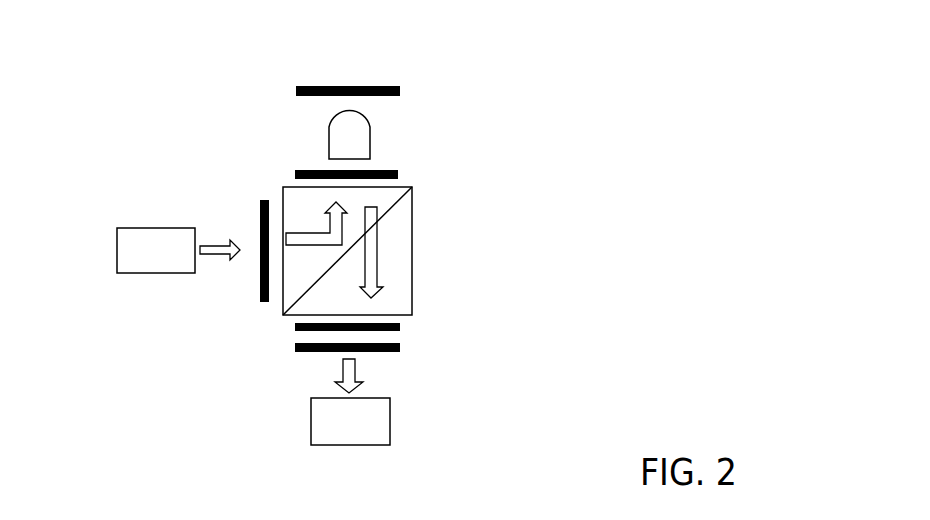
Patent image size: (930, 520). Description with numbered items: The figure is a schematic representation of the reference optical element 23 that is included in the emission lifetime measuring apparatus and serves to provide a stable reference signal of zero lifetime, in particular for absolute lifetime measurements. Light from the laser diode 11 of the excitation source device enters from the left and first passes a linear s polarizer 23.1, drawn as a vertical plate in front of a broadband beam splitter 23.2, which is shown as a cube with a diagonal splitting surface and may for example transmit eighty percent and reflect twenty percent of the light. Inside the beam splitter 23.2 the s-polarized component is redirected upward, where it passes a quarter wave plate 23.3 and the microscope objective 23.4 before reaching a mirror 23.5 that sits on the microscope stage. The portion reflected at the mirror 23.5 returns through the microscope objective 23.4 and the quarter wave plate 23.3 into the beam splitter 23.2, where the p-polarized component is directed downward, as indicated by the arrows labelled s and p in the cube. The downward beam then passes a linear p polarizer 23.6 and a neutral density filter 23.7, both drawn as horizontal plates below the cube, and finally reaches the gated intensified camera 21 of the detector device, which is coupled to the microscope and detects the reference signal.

The reference optical element 23 is at (104, 97).
The laser diode 11 is at (156, 250).
The gated intensified camera 21 is at (350, 421).
The linear s polarizer 23.1 is at (260, 274).
The broadband beam splitter 23.2 is at (398, 200).
The quarter wave plate 23.3 is at (400, 174).
The microscope objective 23.4 is at (370, 137).
The mirror 23.5 is at (297, 91).
The linear p polarizer 23.6 is at (400, 328).
The neutral density filter 23.7 is at (295, 347).